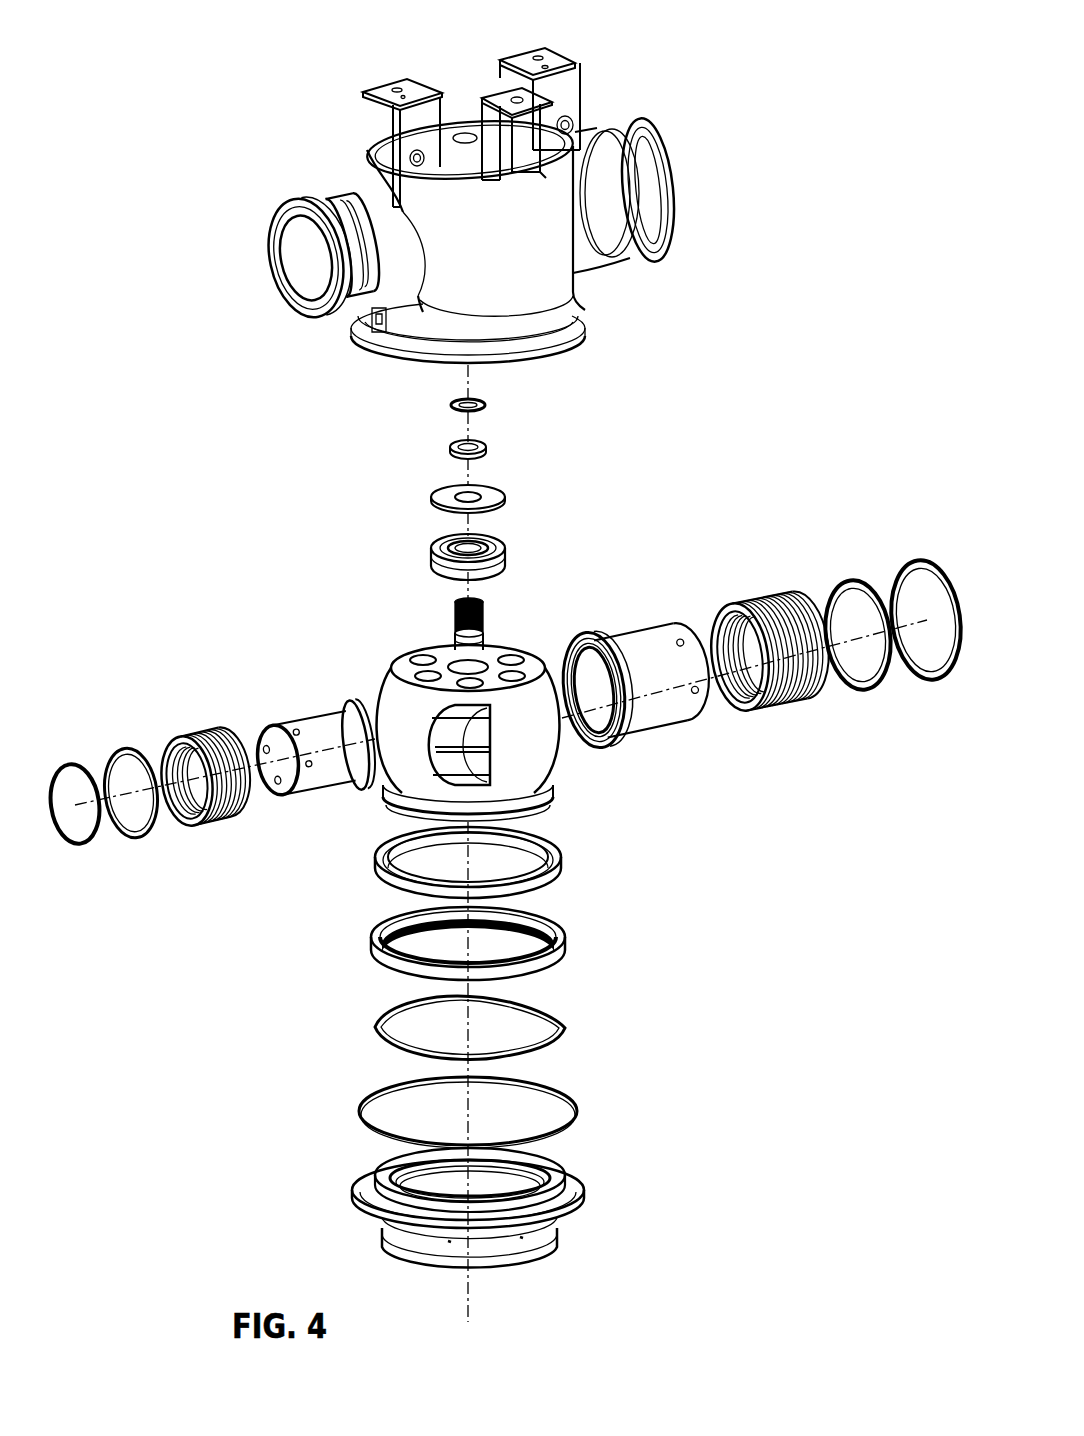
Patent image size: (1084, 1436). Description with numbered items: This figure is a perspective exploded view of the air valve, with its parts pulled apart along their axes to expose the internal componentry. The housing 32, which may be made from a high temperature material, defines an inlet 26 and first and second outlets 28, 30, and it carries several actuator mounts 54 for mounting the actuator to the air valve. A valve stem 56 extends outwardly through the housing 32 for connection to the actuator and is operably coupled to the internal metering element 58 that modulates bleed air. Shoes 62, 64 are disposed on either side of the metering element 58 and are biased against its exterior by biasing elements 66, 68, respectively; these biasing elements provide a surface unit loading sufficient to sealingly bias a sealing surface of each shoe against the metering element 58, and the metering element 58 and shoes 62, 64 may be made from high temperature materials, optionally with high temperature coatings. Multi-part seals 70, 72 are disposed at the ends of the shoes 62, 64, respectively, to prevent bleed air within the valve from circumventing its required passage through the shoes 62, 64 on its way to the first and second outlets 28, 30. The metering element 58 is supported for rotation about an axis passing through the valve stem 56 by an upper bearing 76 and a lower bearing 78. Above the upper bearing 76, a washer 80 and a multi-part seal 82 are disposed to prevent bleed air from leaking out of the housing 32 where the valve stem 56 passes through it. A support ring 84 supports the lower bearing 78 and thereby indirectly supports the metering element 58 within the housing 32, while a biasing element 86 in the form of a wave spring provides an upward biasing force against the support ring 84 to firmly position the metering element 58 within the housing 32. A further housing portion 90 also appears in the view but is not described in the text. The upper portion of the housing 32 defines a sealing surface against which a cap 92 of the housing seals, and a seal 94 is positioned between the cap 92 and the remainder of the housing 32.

The inlet 26 is at (385, 1255).
The first outlet 28 is at (300, 200).
The second outlet 30 is at (630, 130).
The housing 32 is at (530, 275).
The actuator mounts 54 is at (377, 90).
The valve stem 56 is at (455, 615).
The metering element 58 is at (537, 747).
The shoe 62 is at (287, 718).
The shoe 64 is at (618, 637).
The biasing element 66 is at (193, 740).
The biasing element 68 is at (748, 597).
The multi-part seal 70 is at (45, 765).
The multi-part seal 72 is at (828, 582).
The upper bearing 76 is at (430, 550).
The lower bearing 78 is at (377, 860).
The washer 80 is at (435, 497).
The multi-part seal 82 is at (447, 397).
The support ring 84 is at (373, 943).
The biasing element 86 is at (377, 1023).
The upper body flange 90 is at (577, 333).
The cap 92 is at (352, 1193).
The seal 94 is at (362, 1113).